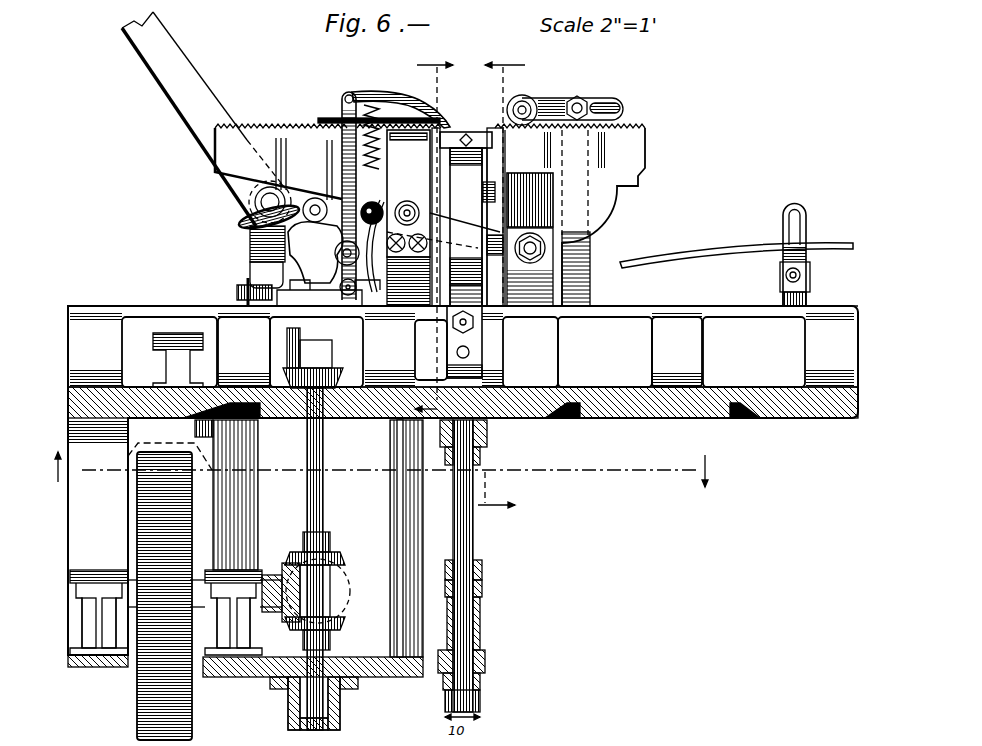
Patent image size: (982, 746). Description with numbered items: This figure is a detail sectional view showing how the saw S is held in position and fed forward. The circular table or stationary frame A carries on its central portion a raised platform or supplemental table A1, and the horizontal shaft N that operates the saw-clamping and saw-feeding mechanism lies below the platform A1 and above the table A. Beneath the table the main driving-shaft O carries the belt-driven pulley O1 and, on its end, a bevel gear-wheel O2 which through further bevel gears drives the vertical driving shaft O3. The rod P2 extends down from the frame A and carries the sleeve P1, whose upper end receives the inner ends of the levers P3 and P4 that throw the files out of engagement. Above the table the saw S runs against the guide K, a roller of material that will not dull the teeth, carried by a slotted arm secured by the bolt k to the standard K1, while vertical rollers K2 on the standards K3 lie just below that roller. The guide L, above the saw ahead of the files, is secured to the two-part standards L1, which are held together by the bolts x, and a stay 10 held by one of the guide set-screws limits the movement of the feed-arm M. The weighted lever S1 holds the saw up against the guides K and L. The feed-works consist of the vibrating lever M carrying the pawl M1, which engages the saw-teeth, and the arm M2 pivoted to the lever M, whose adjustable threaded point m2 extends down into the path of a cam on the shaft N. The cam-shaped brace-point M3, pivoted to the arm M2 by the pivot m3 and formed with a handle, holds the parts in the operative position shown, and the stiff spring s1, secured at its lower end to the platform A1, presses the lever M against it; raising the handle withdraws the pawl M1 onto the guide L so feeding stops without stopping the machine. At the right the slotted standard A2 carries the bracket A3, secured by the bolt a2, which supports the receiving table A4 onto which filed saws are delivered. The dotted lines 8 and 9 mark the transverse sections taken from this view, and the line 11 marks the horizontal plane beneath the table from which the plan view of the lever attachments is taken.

The table or stationary frame A is at (786, 414).
The raised platform or supplemental table A1 is at (727, 293).
The standard A2 is at (806, 312).
The bracket A3 is at (803, 257).
The receiving platform or table A4 is at (735, 245).
The bolt a2 is at (809, 277).
The shaft N is at (343, 350).
The main driving-shaft O is at (198, 577).
The pulley O1 is at (140, 707).
The bevel gear-wheel O2 is at (283, 573).
The driving shaft O3 is at (319, 506).
The sleeve P1 is at (480, 623).
The rod P2 is at (460, 537).
The lever P3 is at (483, 583).
The lever P4 is at (483, 563).
The lever S1 is at (181, 107).
The saw S is at (408, 141).
The stiff spring s1 is at (397, 243).
The main arm or lever of the saw-feeding mechanism M is at (283, 148).
The pawl M1 is at (407, 91).
The arm M2 is at (308, 253).
The shiftable brace-point M3 is at (288, 167).
The adjustable point m2 is at (240, 303).
The pivot m3 is at (260, 186).
The saw-guide L is at (443, 218).
The standards L1 is at (372, 234).
The bolts x is at (407, 203).
The saw-guide K is at (556, 95).
The bolt k is at (592, 100).
The standard K1 is at (588, 252).
The vertical rollers K2 is at (543, 198).
The standards K3 is at (553, 283).
The stay 10 is at (330, 118).
The dotted section line 8 is at (434, 235).
The dotted section line 9 is at (501, 286).
The sight line for plan view 11 is at (390, 469).